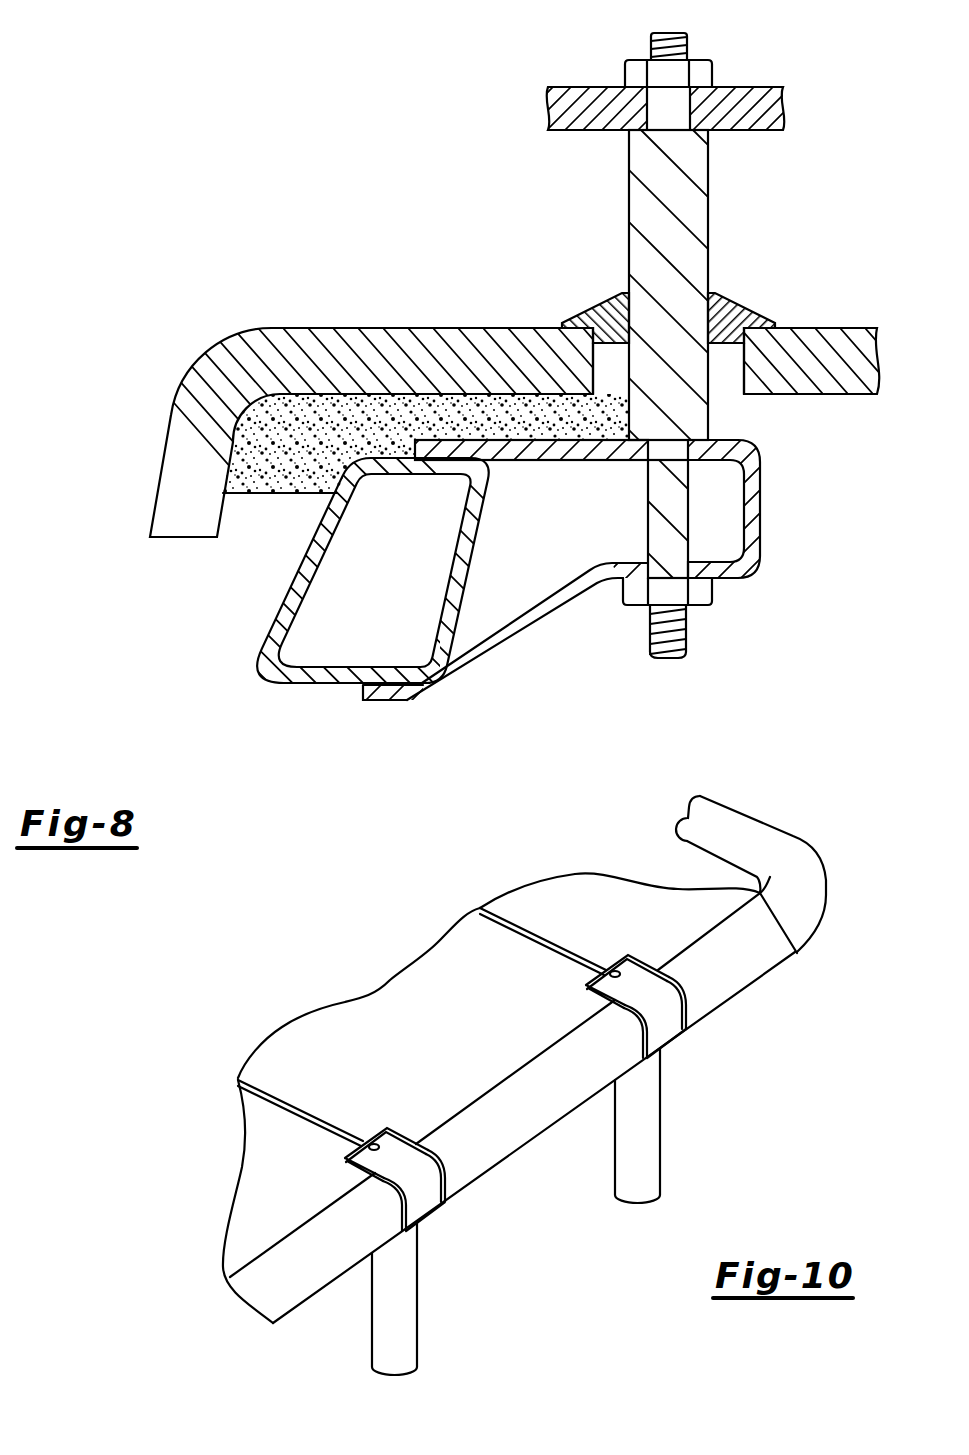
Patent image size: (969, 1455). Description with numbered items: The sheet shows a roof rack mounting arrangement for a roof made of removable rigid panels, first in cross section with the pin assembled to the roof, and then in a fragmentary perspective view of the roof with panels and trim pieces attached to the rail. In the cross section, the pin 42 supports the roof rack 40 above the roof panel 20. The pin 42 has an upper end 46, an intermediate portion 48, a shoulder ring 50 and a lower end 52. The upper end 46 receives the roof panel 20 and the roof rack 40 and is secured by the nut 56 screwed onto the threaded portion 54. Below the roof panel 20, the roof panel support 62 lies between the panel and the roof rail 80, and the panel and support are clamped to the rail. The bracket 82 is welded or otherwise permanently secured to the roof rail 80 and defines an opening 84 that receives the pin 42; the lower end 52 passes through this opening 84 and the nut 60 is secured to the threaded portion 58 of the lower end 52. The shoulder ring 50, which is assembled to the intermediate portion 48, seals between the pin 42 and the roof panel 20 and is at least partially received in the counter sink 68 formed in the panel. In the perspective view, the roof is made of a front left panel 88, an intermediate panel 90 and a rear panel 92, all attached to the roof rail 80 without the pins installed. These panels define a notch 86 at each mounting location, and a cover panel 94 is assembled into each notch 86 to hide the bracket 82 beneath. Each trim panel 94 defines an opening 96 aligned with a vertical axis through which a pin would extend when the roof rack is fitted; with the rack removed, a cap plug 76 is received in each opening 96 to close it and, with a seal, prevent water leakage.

In FIG. 8, the roof panel 20 is at (357, 340).
In FIG. 8, the roof rack 40 is at (750, 93).
In FIG. 8, the pin 42 is at (718, 208).
In FIG. 8, the upper end 46 is at (668, 35).
In FIG. 8, the intermediate portion 48 is at (643, 205).
In FIG. 8, the shoulder ring 50 is at (740, 313).
In FIG. 8, the lower end 52 is at (670, 657).
In FIG. 8, the threaded portion 54 is at (652, 42).
In FIG. 8, the nut 56 is at (632, 75).
In FIG. 8, the threaded portion 58 is at (693, 632).
In FIG. 8, the nut 60 is at (707, 593).
In FIG. 8, the roof panel support 62 is at (257, 470).
In FIG. 8, the counter sink 68 is at (583, 322).
In FIG. 10, the cap plug 76 is at (613, 971).
In FIG. 8, the roof rail 80 is at (287, 657).
In FIG. 10, the roof rail 80 is at (797, 872).
In FIG. 8, the bracket 82 is at (508, 638).
In FIG. 8, the opening 84 is at (682, 452).
In FIG. 10, the notch 86 is at (673, 1002).
In FIG. 10, the front left panel 88 is at (258, 1175).
In FIG. 10, the intermediate panel 90 is at (388, 1022).
In FIG. 10, the rear panel 92 is at (565, 882).
In FIG. 10, the cover panel 94 is at (661, 1031).
In FIG. 10, the opening 96 is at (633, 973).